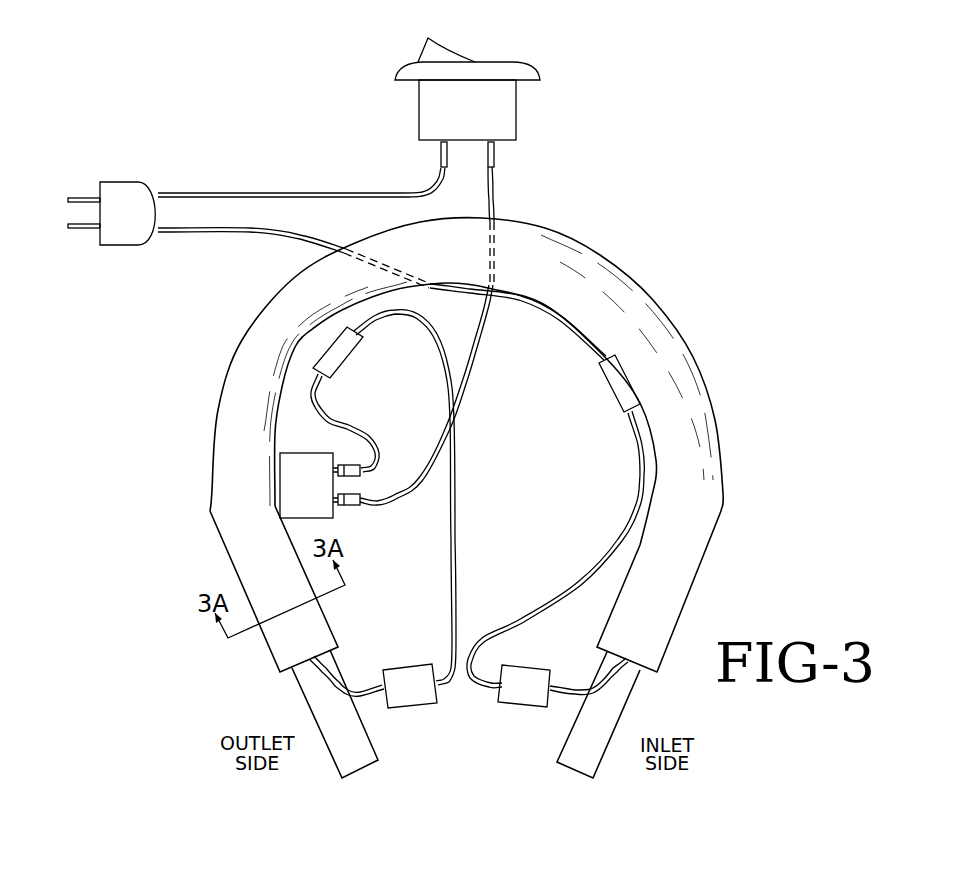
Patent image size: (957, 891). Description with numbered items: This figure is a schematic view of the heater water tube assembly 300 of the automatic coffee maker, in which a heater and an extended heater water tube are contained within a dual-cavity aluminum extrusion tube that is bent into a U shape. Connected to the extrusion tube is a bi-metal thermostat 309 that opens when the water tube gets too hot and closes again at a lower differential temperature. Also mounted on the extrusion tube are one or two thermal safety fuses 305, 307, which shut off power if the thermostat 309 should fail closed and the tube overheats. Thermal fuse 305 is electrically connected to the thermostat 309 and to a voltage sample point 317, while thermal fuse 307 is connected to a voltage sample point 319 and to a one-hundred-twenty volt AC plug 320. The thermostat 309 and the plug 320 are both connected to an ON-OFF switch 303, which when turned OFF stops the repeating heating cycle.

The heater assembly 300 is at (752, 218).
The ON-OFF switch 303 is at (513, 62).
The thermal safety fuse 305 is at (340, 360).
The thermal safety fuse 307 is at (613, 393).
The bi-metal thermostat 309 is at (310, 517).
The voltage sample point 317 is at (408, 708).
The voltage sample point 319 is at (520, 707).
The 120 volt AC plug 320 is at (120, 182).